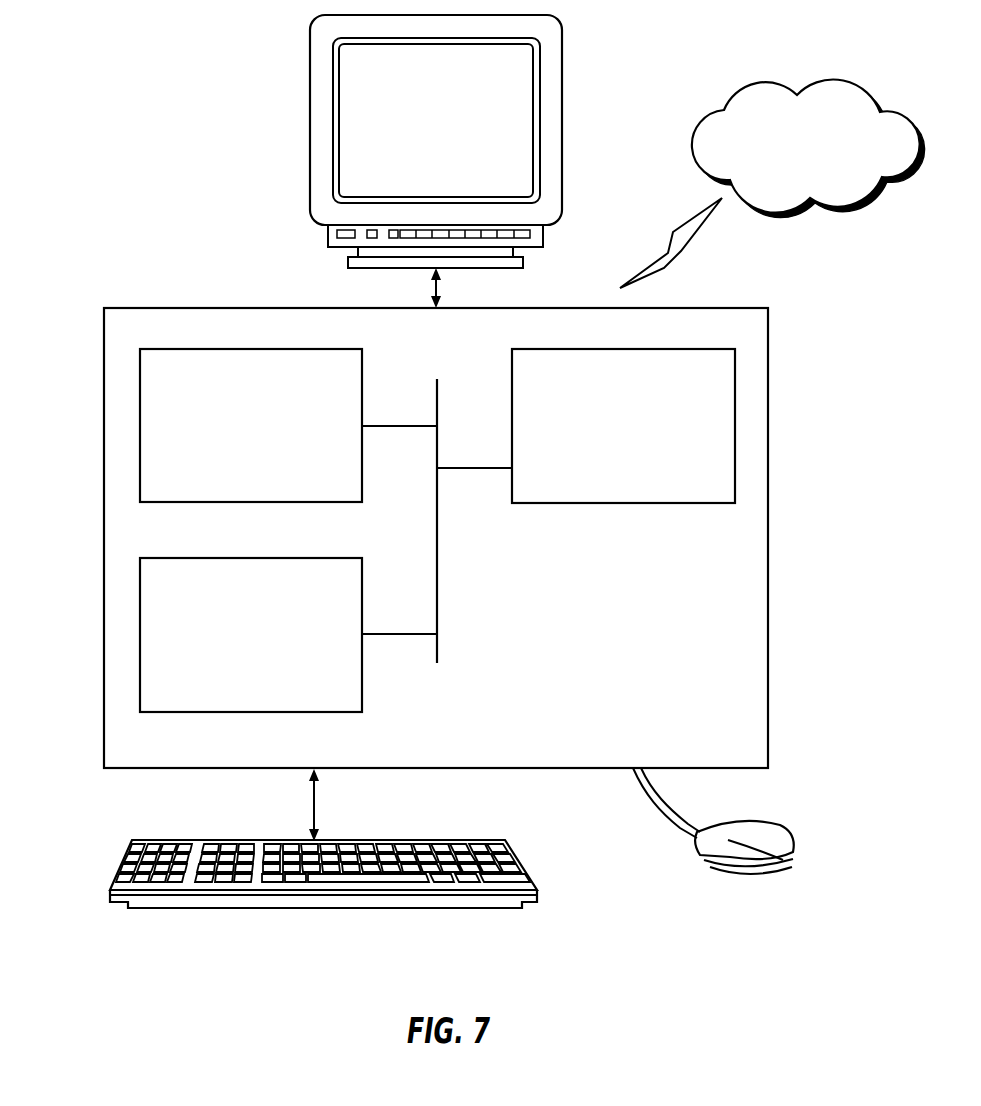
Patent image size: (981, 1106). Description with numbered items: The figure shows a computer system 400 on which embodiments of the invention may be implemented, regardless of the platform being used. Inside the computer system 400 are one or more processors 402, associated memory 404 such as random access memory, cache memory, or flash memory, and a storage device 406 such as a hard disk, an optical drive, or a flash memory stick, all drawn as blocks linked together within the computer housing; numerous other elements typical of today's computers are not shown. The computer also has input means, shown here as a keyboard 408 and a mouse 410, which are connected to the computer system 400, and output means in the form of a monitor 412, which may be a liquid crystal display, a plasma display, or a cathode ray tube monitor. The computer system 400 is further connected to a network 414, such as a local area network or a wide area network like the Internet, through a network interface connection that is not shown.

The computer system 400 is at (510, 538).
The processor 402 is at (648, 440).
The memory 404 is at (275, 440).
The storage device 406 is at (275, 648).
The keyboard 408 is at (123, 860).
The mouse 410 is at (758, 877).
The monitor 412 is at (460, 136).
The network 414 is at (830, 160).